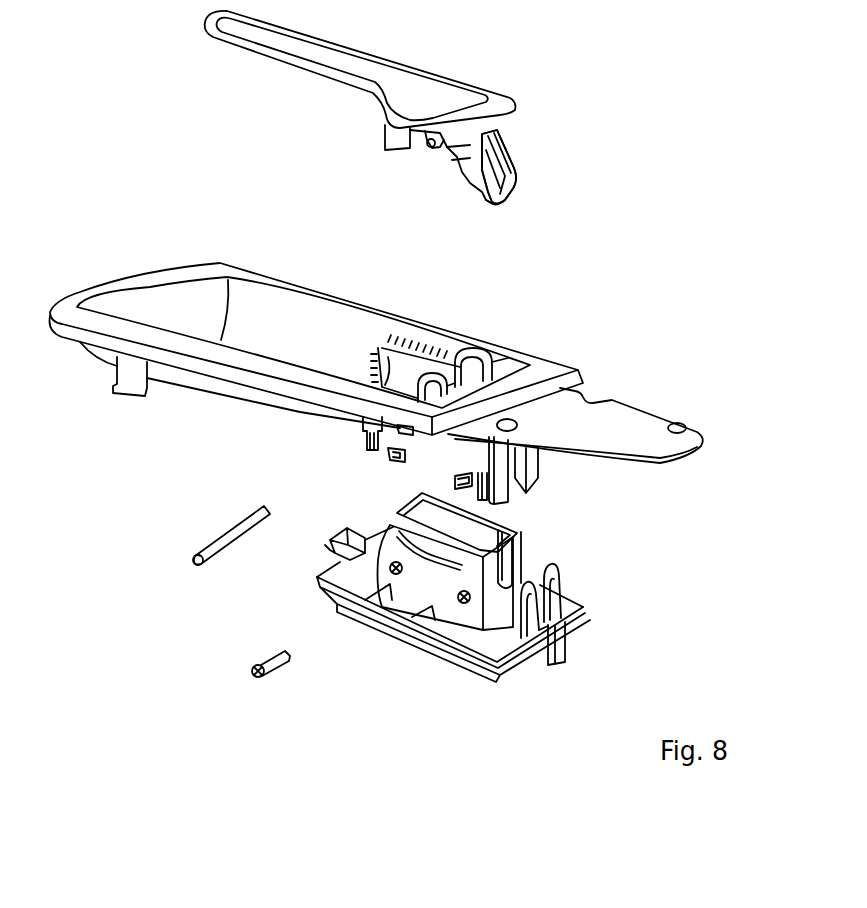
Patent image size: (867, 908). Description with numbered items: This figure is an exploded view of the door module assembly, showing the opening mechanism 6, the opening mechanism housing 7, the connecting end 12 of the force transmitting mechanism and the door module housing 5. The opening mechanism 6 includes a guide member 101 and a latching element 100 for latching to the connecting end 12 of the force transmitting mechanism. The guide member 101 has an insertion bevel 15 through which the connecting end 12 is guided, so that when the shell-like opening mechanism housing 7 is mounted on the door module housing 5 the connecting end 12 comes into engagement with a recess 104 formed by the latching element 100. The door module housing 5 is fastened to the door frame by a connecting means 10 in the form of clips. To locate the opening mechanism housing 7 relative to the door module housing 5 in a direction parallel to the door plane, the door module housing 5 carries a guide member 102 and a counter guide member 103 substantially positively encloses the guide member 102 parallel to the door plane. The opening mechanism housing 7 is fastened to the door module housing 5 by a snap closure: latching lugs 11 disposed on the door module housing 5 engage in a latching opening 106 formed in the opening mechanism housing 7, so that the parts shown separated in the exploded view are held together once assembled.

The door module housing 5 is at (447, 613).
The opening mechanism 6 is at (397, 82).
The opening mechanism housing 7 is at (305, 312).
The connecting means 10 is at (562, 652).
The latching lugs 11 is at (394, 574).
The connecting end 12 is at (277, 663).
The insertion bevel 15 is at (482, 203).
The latching element 100 is at (489, 173).
The guide member 101 is at (538, 135).
The guide member 102 is at (547, 605).
The counter guide member 103 is at (537, 470).
The recess 104 is at (480, 187).
The latching opening 106 is at (396, 462).